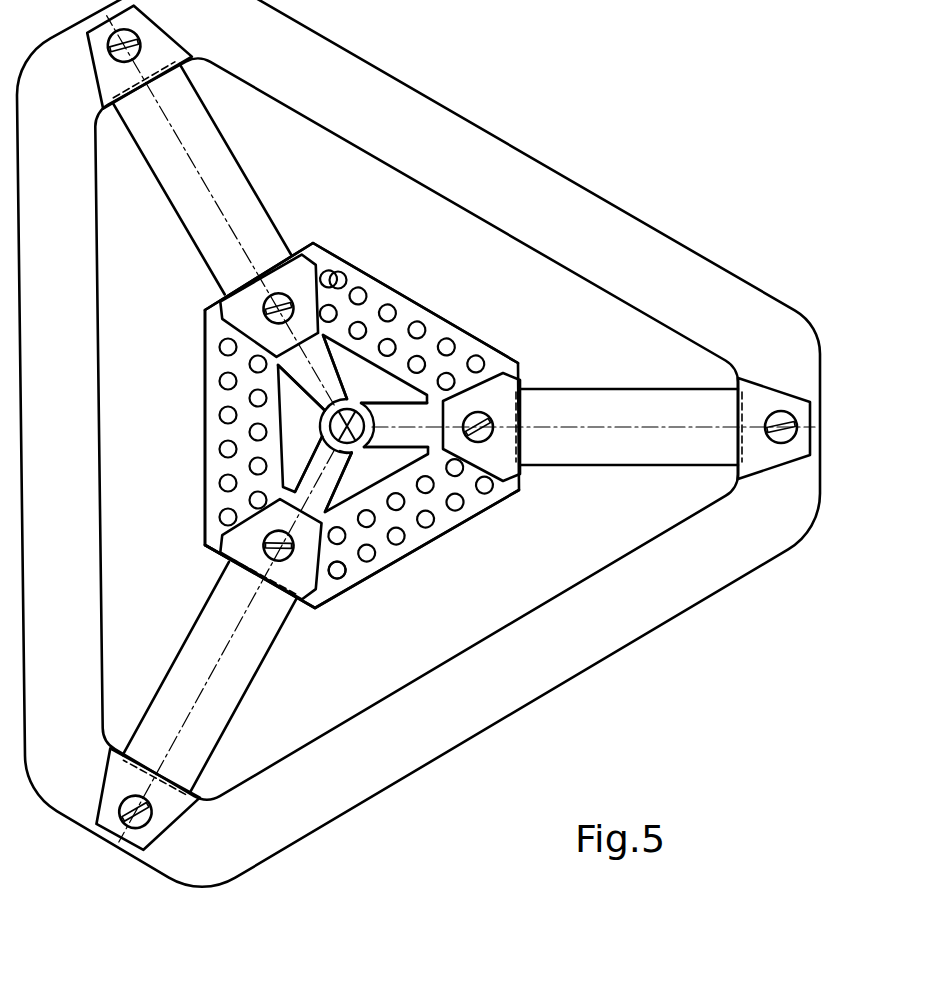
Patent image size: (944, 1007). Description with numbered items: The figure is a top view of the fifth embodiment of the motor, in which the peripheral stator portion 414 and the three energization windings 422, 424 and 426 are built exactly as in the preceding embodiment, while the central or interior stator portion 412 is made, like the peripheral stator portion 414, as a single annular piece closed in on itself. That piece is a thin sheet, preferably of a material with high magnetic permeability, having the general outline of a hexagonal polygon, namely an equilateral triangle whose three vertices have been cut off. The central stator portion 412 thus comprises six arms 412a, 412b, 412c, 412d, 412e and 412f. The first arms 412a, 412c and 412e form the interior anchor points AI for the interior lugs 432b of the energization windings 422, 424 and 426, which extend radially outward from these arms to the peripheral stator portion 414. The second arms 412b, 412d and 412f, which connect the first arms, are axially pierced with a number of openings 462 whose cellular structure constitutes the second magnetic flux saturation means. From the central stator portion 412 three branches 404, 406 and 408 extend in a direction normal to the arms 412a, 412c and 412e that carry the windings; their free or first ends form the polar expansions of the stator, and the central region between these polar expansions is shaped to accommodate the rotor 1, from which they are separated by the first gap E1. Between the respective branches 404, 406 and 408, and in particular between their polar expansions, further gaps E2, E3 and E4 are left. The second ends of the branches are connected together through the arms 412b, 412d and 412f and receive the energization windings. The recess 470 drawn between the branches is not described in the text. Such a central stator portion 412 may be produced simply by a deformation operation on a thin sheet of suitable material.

The rotor 1 is at (355, 457).
The branch 404 is at (299, 478).
The branch 406 is at (313, 387).
The branch 408 is at (400, 437).
The central stator portion 412 is at (206, 514).
The arm 412a is at (206, 306).
The arm 412b is at (205, 417).
The arm 412c is at (222, 553).
The arm 412d is at (500, 482).
The arm 412e is at (515, 358).
The arm 412f is at (354, 281).
The peripheral stator portion 414 is at (494, 690).
The energization winding 422 is at (255, 683).
The energization winding 424 is at (157, 185).
The energization winding 426 is at (605, 386).
The interior lug 432b is at (500, 463).
The opening 462 is at (347, 578).
The cutout 470 is at (372, 383).
The interior anchor point AI is at (293, 268).
The first gap E1 is at (214, 538).
The gap E2 is at (321, 441).
The gap E3 is at (365, 403).
The gap E4 is at (350, 448).